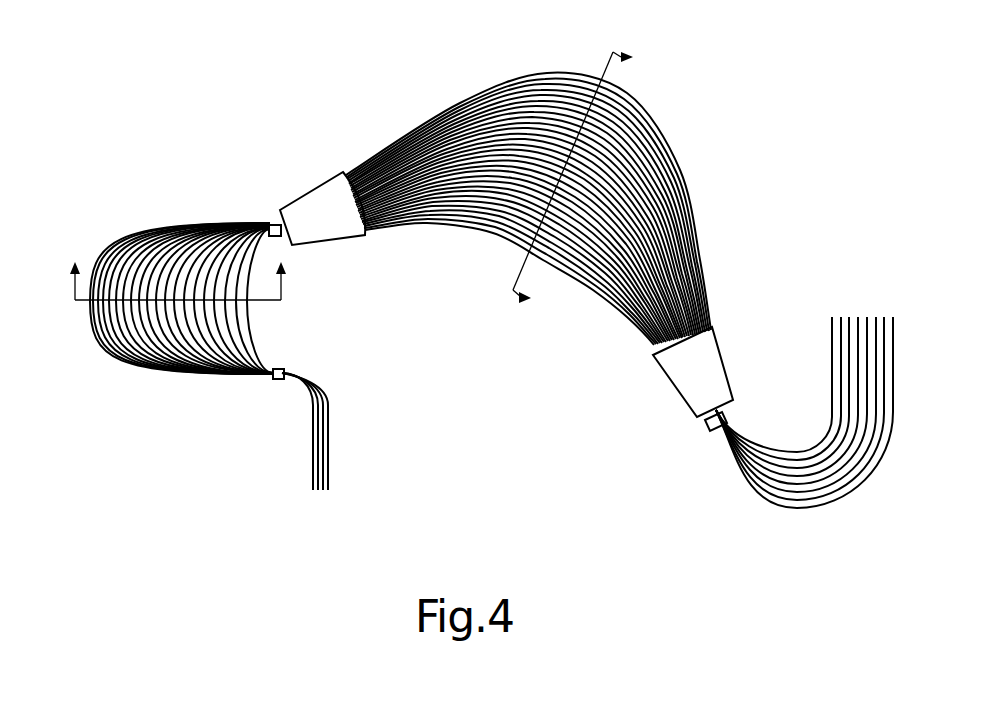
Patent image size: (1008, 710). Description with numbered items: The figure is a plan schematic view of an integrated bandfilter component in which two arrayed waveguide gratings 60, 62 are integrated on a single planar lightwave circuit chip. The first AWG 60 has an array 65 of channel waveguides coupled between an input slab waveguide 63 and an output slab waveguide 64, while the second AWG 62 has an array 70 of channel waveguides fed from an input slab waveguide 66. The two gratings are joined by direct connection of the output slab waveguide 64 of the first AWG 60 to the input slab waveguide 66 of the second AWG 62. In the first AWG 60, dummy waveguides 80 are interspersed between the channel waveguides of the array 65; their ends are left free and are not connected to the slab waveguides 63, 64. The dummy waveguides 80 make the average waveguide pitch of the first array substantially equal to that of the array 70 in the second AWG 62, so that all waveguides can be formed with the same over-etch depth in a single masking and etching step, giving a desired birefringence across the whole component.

The first arrayed waveguide grating 60 is at (129, 157).
The second arrayed waveguide grating 62 is at (722, 230).
The input slab waveguide 63 is at (275, 378).
The output slab waveguide 64 is at (272, 226).
The array of channel waveguides 65 is at (172, 329).
The input slab waveguide 66 is at (329, 176).
The array of channel waveguides 70 is at (502, 70).
The dummy waveguides 80 is at (87, 323).